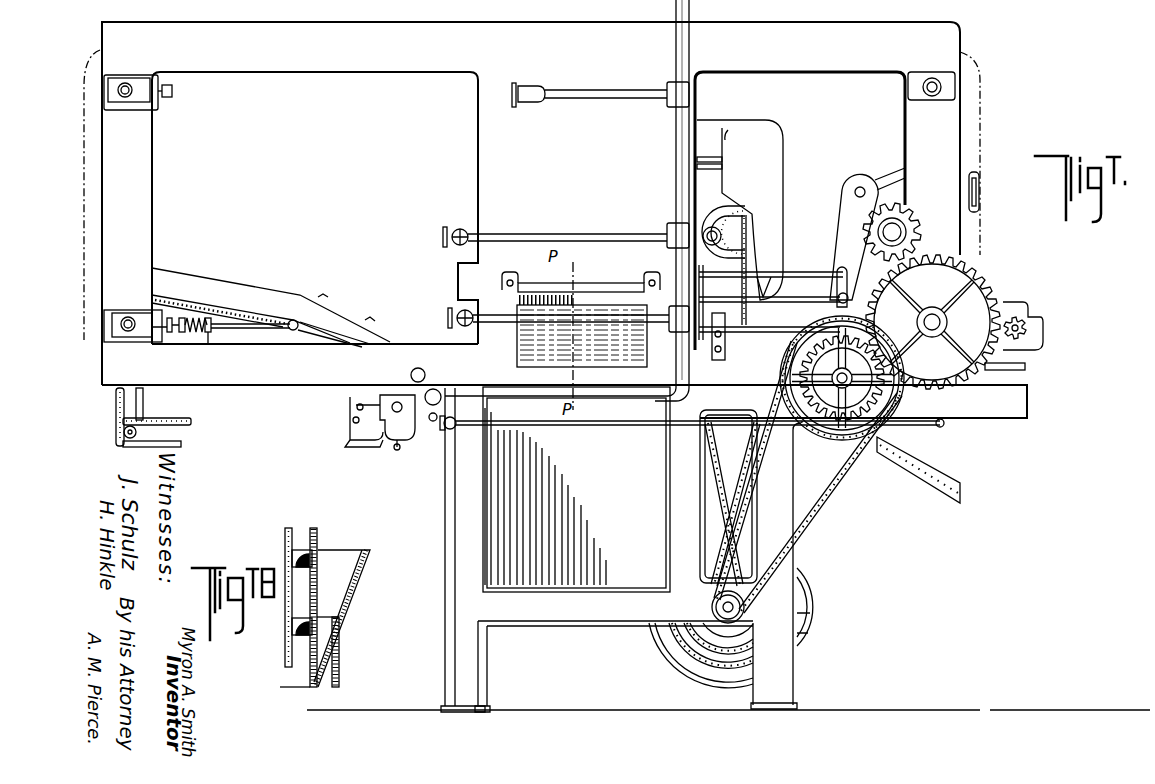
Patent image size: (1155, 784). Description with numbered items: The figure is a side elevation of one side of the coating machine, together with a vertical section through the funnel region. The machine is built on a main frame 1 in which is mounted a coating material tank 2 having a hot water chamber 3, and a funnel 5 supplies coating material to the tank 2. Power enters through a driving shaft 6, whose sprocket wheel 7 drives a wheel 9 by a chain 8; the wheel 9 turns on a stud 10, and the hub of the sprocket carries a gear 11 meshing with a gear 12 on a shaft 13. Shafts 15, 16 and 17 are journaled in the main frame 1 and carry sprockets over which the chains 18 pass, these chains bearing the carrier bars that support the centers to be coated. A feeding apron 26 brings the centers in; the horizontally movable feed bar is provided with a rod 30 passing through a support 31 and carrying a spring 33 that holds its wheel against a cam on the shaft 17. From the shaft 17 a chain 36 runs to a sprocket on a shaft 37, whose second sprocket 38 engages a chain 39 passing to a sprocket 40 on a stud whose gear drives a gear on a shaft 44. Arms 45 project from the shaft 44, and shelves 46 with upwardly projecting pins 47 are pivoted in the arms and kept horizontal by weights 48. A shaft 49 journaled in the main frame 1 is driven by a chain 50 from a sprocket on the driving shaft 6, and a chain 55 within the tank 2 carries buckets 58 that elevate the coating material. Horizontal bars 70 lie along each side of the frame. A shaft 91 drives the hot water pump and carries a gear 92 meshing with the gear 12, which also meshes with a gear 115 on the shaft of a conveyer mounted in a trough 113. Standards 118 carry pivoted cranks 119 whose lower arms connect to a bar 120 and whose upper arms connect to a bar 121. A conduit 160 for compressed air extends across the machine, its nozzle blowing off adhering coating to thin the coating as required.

In FIG. 1, the main frame 1 is at (621, 549).
In FIG. 18, the coating material tank 2 is at (295, 608).
In FIG. 18, the hot water chamber 3 is at (332, 661).
In FIG. 1, the funnel 5 is at (628, 290).
In FIG. 18, the funnel 5 is at (345, 550).
In FIG. 1, the driving shaft 6 is at (714, 607).
In FIG. 1, the sprocket wheel 7 is at (746, 604).
In FIG. 1, the chain 8 is at (803, 477).
In FIG. 1, the wheel 9 is at (842, 394).
In FIG. 1, the stud 10 is at (792, 380).
In FIG. 1, the gear 11 is at (800, 366).
In FIG. 1, the gear 12 is at (986, 290).
In FIG. 1, the shaft 13 is at (932, 307).
In FIG. 1, the shaft 15 is at (932, 96).
In FIG. 1, the shaft 16 is at (125, 97).
In FIG. 1, the shaft 17 is at (130, 318).
In FIG. 1, the chains 18 is at (986, 192).
In FIG. 1, the feeding apron 26 is at (262, 302).
In FIG. 1, the rod 30 is at (255, 338).
In FIG. 1, the support 31 is at (213, 335).
In FIG. 1, the spring 33 is at (182, 334).
In FIG. 1, the chain 36 is at (116, 402).
In FIG. 1, the shaft 37 is at (140, 454).
In FIG. 1, the sprocket 38 is at (134, 440).
In FIG. 1, the chain 39 is at (188, 424).
In FIG. 1, the sprocket 40 is at (364, 456).
In FIG. 1, the shaft 44 is at (397, 395).
In FIG. 1, the arms 45 is at (373, 397).
In FIG. 1, the shelves 46 is at (357, 407).
In FIG. 1, the pins 47 is at (350, 398).
In FIG. 1, the weights 48 is at (410, 456).
In FIG. 1, the shaft 49 is at (740, 224).
In FIG. 1, the chain 50 is at (752, 252).
In FIG. 18, the chain 55 is at (291, 632).
In FIG. 18, the buckets 58 is at (296, 549).
In FIG. 1, the horizontal bars 70 is at (802, 350).
In FIG. 1, the shaft 91 is at (896, 228).
In FIG. 1, the gear 92 is at (885, 215).
In FIG. 1, the trough 113 is at (1040, 326).
In FIG. 1, the gear 115 is at (1040, 342).
In FIG. 1, the standards 118 is at (845, 318).
In FIG. 1, the cranks 119 is at (838, 276).
In FIG. 1, the bar 120 is at (769, 306).
In FIG. 1, the bar 121 is at (771, 276).
In FIG. 1, the conduit 160 is at (740, 210).